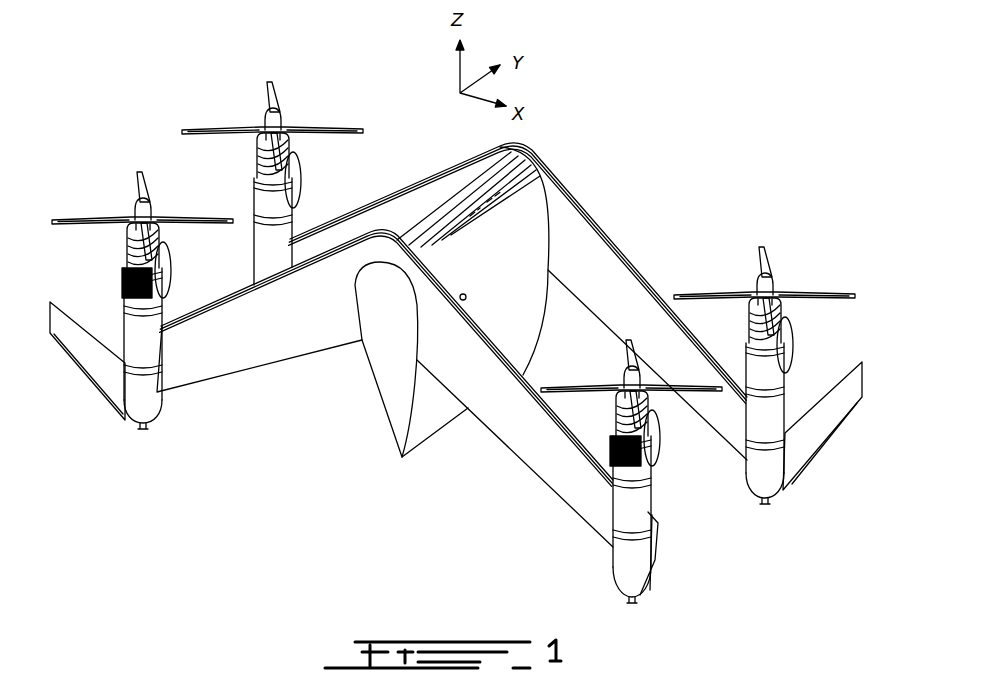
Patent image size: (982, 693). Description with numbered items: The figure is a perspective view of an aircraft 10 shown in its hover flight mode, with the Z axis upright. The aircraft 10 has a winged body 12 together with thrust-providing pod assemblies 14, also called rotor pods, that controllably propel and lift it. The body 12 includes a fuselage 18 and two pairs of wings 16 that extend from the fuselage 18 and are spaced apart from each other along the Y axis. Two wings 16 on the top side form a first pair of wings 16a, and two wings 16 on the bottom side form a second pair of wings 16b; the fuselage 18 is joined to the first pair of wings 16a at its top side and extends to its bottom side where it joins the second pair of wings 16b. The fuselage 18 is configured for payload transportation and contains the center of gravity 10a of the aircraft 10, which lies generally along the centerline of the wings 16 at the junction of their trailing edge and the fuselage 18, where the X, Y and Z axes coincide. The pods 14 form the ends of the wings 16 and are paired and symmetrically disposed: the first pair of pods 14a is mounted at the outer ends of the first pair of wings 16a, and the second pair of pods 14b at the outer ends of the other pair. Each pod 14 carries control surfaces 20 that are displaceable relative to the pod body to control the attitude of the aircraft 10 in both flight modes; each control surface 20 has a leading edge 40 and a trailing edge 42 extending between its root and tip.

The aircraft 10 is at (755, 99).
The center of gravity 10a is at (465, 295).
The winged body 12 is at (368, 520).
The thrust-providing pod assemblies 14 is at (451, 339).
The first pair of pods 14a is at (88, 436).
The second pair of pods 14b is at (205, 72).
The wings 16 is at (452, 322).
The first pair of wings 16a is at (252, 343).
The second pair of wings 16b is at (393, 203).
The fuselage 18 is at (520, 217).
The control surfaces 20 is at (78, 350).
The leading edge 40 is at (846, 416).
The trailing edge 42 is at (820, 393).